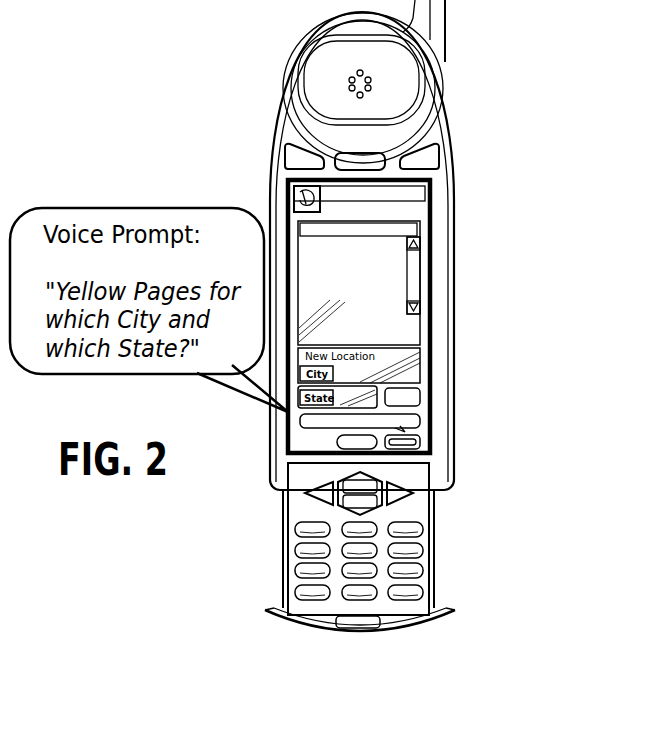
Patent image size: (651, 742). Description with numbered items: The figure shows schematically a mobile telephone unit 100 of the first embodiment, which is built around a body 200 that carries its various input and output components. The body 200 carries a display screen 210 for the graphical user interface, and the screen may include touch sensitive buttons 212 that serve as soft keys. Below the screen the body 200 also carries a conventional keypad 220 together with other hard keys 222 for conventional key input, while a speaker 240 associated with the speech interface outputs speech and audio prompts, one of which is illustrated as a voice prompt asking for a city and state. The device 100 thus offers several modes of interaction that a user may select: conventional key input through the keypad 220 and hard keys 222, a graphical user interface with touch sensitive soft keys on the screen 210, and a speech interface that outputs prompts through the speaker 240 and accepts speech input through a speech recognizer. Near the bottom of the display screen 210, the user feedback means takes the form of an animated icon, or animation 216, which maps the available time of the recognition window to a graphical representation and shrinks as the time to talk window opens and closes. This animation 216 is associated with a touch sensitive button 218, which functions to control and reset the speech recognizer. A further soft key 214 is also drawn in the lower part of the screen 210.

The mobile telephone unit 100 is at (455, 200).
The body 200 is at (300, 222).
The display screen 210 is at (420, 322).
The touch sensitive buttons 212 is at (420, 397).
The other button 214 is at (290, 438).
The animation 216 is at (420, 418).
The touch sensitive button 218 is at (430, 437).
The keypad 220 is at (430, 550).
The hard keys 222 is at (440, 156).
The speaker 240 is at (340, 65).